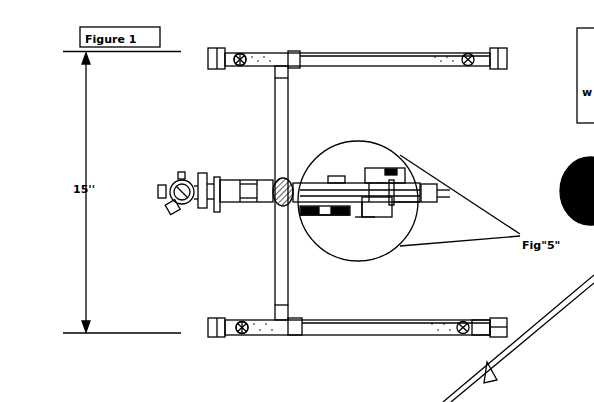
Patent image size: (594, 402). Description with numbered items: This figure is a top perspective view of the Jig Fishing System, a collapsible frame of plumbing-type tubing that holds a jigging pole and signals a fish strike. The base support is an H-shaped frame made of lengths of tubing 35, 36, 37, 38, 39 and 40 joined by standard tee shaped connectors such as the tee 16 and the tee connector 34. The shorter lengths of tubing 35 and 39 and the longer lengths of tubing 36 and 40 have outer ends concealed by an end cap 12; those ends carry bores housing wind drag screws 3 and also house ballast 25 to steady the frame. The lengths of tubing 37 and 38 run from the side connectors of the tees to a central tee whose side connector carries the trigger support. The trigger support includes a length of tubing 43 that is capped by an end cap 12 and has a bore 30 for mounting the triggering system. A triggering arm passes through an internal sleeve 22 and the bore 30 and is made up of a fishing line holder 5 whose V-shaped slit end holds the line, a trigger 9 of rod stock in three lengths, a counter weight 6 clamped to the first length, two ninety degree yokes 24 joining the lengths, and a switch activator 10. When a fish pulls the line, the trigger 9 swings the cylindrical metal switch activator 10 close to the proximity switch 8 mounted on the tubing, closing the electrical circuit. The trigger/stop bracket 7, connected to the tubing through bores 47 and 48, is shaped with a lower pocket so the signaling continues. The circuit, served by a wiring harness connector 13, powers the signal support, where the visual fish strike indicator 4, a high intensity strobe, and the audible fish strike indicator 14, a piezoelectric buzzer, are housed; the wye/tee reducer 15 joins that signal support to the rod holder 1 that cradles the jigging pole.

The rod holder 1 is at (232, 179).
The wind drag screws 3 is at (240, 64).
The visual fish strike indicator 4 is at (168, 172).
The fishing line holder 5 is at (333, 238).
The counter weight 6 is at (366, 222).
The trigger/stop bracket 7 is at (400, 210).
The proximity switch 8 is at (337, 177).
The trigger 9 is at (384, 170).
The switch activator 10 is at (394, 172).
The end cap 12 is at (210, 57).
The wiring harness connector 13 is at (160, 196).
The audible fish strike indicator 14 is at (200, 210).
The wye/tee reducer 15 is at (201, 172).
The tee 16 is at (296, 320).
The internal sleeve 22 is at (415, 205).
The 90° yoke 24 is at (380, 168).
The ballast 25 is at (264, 66).
The bore 30 is at (378, 216).
The tee connector 34 is at (296, 68).
The length of tubing 35 is at (250, 338).
The length of tubing 36 is at (352, 338).
The length of tubing 37 is at (275, 252).
The length of tubing 38 is at (290, 126).
The length of tubing 39 is at (242, 54).
The length of tubing 40 is at (352, 53).
The length of tubing 43 is at (306, 180).
The bore 47 is at (345, 192).
The bore 48 is at (438, 212).